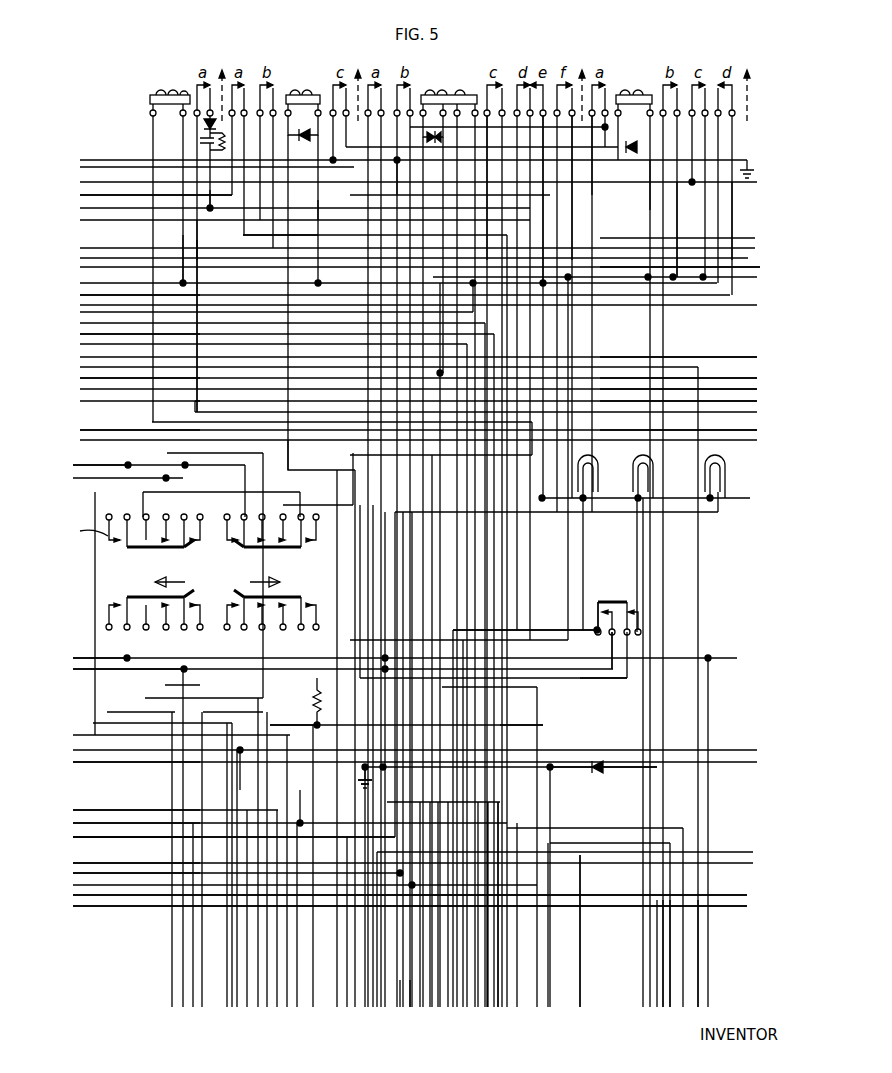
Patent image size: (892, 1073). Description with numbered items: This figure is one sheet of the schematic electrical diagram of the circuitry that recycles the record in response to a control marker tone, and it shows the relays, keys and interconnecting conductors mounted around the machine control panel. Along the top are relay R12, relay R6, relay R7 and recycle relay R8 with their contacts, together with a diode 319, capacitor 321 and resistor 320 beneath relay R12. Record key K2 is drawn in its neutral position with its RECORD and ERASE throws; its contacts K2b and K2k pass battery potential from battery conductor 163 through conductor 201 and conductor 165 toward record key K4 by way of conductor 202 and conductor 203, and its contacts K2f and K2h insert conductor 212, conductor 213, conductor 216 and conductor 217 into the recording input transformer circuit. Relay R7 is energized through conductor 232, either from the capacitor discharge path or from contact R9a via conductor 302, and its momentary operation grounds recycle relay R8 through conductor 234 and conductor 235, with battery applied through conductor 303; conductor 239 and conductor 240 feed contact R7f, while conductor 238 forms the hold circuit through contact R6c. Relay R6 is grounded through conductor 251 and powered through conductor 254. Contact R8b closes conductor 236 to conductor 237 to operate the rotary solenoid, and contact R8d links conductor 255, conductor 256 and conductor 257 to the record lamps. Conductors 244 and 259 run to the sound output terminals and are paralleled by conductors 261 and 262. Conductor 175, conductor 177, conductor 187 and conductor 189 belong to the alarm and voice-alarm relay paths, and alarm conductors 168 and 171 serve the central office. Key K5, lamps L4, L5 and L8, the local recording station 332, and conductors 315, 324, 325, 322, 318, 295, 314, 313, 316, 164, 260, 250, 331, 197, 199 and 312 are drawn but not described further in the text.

The relay R12 is at (170, 89).
The relay R6 is at (303, 104).
The relay R7 is at (449, 105).
The recycle relay R8 is at (634, 110).
The record key K2 is at (228, 586).
The key K5 is at (632, 578).
The lamp L4 is at (588, 455).
The lamp L5 is at (633, 468).
The lamp L8 is at (727, 480).
The diode 319 is at (205, 124).
The capacitor 321 is at (200, 140).
The resistor 320 is at (204, 145).
The conductor 315 is at (80, 195).
The conductor 324 is at (197, 222).
The conductor 325 is at (183, 237).
The conductor 322 is at (210, 210).
The conductor 318 is at (200, 248).
The conductor 175 is at (80, 248).
The battery conductor 163 is at (80, 295).
The conductor 177 is at (80, 334).
The conductor 189 is at (80, 378).
The conductor 295 is at (85, 395).
The conductor 187 is at (115, 398).
The conductor 201 is at (73, 465).
The conductor 251 is at (288, 460).
The conductor 314 is at (328, 208).
The conductor 234 is at (400, 162).
The conductor 254 is at (318, 246).
The conductor 232 is at (440, 302).
The conductor 313 is at (482, 192).
The conductor 238 is at (550, 152).
The conductor 235 is at (586, 147).
The conductor 240 is at (572, 190).
The conductor 239 is at (574, 209).
The conductor 303 is at (655, 200).
The conductor 244 is at (608, 240).
The conductor 236 is at (676, 220).
The conductor 257 is at (732, 212).
The conductor 259 is at (748, 250).
The conductor 302 is at (757, 378).
The conductor 213 is at (73, 658).
The conductor 216 is at (73, 669).
The conductor 217 is at (316, 683).
The conductor 212 is at (262, 725).
The conductor 316 is at (570, 630).
The conductor 256 is at (543, 725).
The conductor 237 is at (657, 735).
The conductor 203 is at (73, 762).
The conductor 202 is at (240, 790).
The conductor 255 is at (300, 790).
The conductor 165 is at (358, 790).
The conductor 164 is at (73, 810).
The alarm conductor 168 is at (73, 823).
The alarm conductor 171 is at (73, 837).
The conductor 261 is at (73, 863).
The conductor 262 is at (73, 873).
The conductor 260 is at (73, 895).
The conductor 250 is at (73, 906).
The conductor 331 is at (300, 845).
The conductor 197 is at (496, 858).
The conductor 199 is at (575, 860).
The local recording station 332 is at (670, 975).
The conductor 312 is at (700, 985).